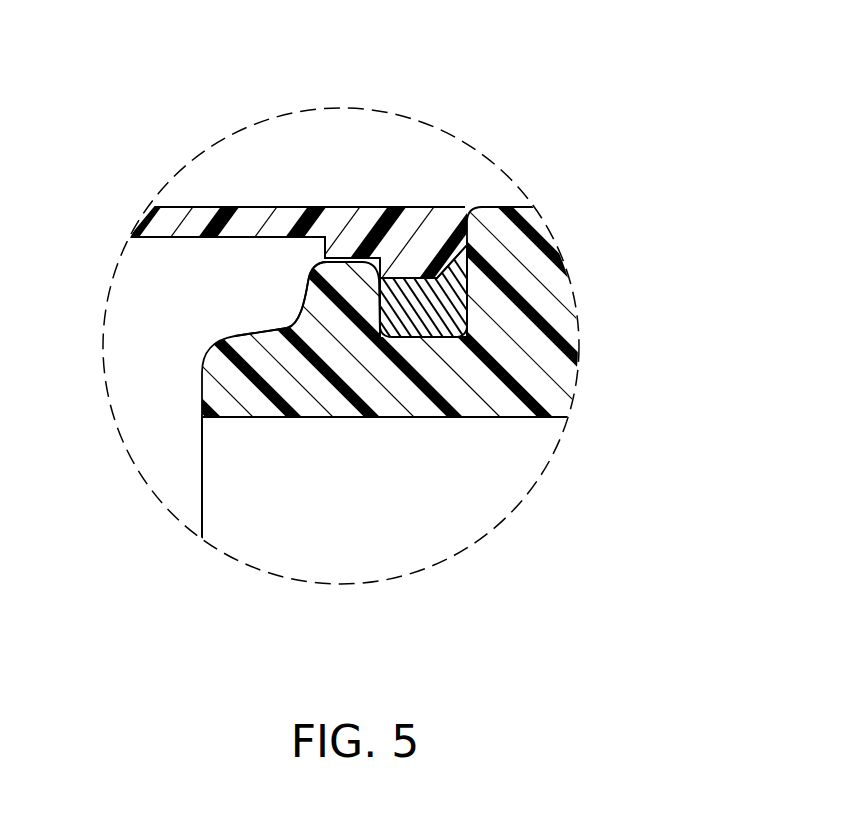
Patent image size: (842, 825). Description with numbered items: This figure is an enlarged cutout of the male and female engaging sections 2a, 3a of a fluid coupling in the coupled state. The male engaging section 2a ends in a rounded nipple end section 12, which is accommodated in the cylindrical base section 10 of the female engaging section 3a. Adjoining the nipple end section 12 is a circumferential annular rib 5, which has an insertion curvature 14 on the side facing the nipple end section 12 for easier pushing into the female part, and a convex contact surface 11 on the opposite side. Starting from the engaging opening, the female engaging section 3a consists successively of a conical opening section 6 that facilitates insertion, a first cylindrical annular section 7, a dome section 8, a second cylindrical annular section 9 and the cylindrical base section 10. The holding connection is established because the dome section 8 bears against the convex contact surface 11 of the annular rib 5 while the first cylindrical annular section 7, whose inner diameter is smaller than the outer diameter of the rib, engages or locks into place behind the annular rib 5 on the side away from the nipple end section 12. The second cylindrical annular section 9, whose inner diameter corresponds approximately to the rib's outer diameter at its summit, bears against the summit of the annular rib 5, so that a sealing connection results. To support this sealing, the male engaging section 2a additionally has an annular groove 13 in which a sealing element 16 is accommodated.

The male engaging section 2a is at (380, 550).
The female engaging section 3a is at (385, 200).
The annular rib 5 is at (315, 295).
The conical opening section 6 is at (459, 259).
The first cylindrical annular section 7 is at (414, 268).
The dome section 8 is at (376, 250).
The second cylindrical annular section 9 is at (338, 243).
The cylindrical base section 10 is at (258, 236).
The convex contact surface 11 is at (366, 285).
The nipple end section 12 is at (203, 493).
The annular groove 13 is at (468, 330).
The insertion curvature 14 is at (298, 273).
The sealing element 16 is at (464, 340).